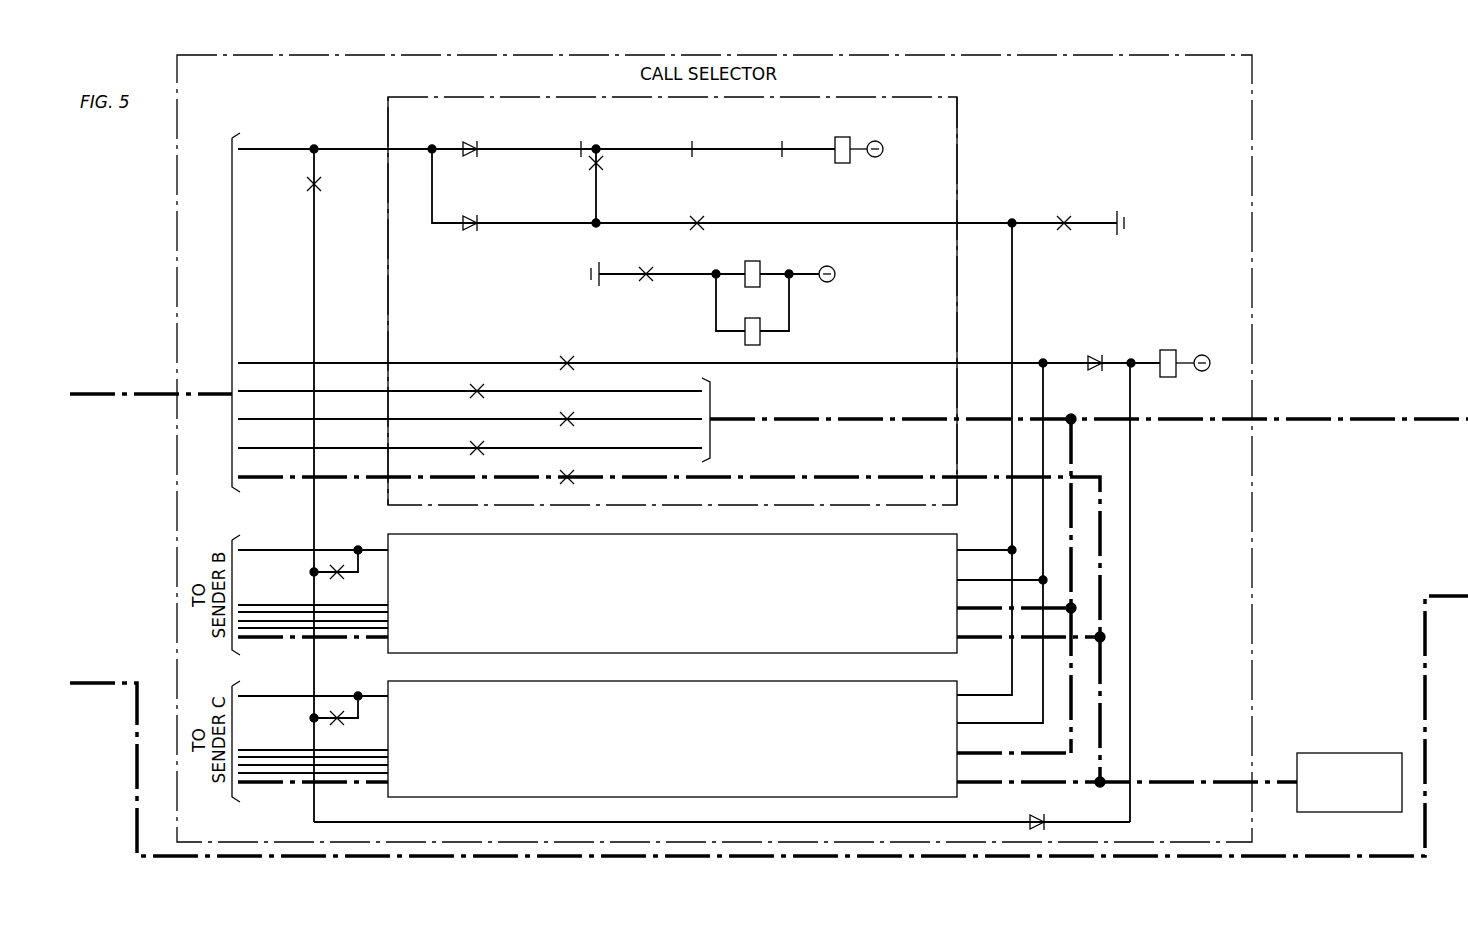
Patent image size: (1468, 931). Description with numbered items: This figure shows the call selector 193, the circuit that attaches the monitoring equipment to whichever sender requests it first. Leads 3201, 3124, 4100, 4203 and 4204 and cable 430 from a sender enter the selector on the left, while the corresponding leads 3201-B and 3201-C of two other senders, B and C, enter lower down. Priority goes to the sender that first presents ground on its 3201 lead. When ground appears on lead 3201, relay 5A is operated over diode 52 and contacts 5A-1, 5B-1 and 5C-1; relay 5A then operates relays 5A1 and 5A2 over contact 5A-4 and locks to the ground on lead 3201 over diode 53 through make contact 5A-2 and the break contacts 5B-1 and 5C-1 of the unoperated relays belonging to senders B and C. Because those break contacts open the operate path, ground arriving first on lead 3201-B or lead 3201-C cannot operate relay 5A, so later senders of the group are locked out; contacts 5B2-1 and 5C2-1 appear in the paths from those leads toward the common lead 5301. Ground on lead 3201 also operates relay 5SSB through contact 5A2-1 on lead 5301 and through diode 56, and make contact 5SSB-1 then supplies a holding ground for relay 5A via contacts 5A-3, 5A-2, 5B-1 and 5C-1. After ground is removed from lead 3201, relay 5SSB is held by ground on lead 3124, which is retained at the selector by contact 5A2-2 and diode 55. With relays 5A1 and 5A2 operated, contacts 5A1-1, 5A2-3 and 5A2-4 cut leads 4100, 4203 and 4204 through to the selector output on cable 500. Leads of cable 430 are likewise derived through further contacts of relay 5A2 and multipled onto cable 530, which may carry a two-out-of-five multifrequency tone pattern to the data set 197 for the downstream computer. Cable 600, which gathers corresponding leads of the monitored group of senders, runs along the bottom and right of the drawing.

The call selector 193 is at (1252, 285).
The lead 3201 is at (232, 143).
The lead 5301 is at (314, 258).
The contact 5A2-1 is at (340, 184).
The diode 52 is at (472, 138).
The diode 53 is at (774, 190).
The contact 5A-1 is at (590, 137).
The make contact 5A-2 is at (617, 186).
The break contact 5B-1 is at (690, 137).
The break contact 5C-1 is at (781, 137).
The relay 5A is at (857, 138).
The contact 5A-3 is at (694, 212).
The make contact 5SSB-1 is at (1079, 214).
The contact 5A-4 is at (653, 265).
The relay 5A1 is at (773, 263).
The relay 5A2 is at (752, 309).
The lead 3124 is at (699, 354).
The contact 5A2-2 is at (563, 351).
The diode 55 is at (1093, 352).
The relay 5SSB is at (1178, 352).
The lead 4203 is at (470, 380).
The contact 5A2-3 is at (474, 380).
The lead 4100 is at (470, 408).
The contact 5A1-1 is at (570, 408).
The lead 4204 is at (470, 437).
The contact 5A2-4 is at (474, 437).
The cable 430 is at (669, 619).
The cable 500 is at (1310, 419).
The lead 3201-B is at (232, 545).
The contact 5B2-1 is at (338, 574).
The lead 3201-C is at (232, 691).
The contact 5C2-1 is at (338, 720).
The cable 530 is at (1187, 782).
The data set 197 is at (1327, 753).
The diode 56 is at (722, 812).
The cable 600 is at (88, 683).